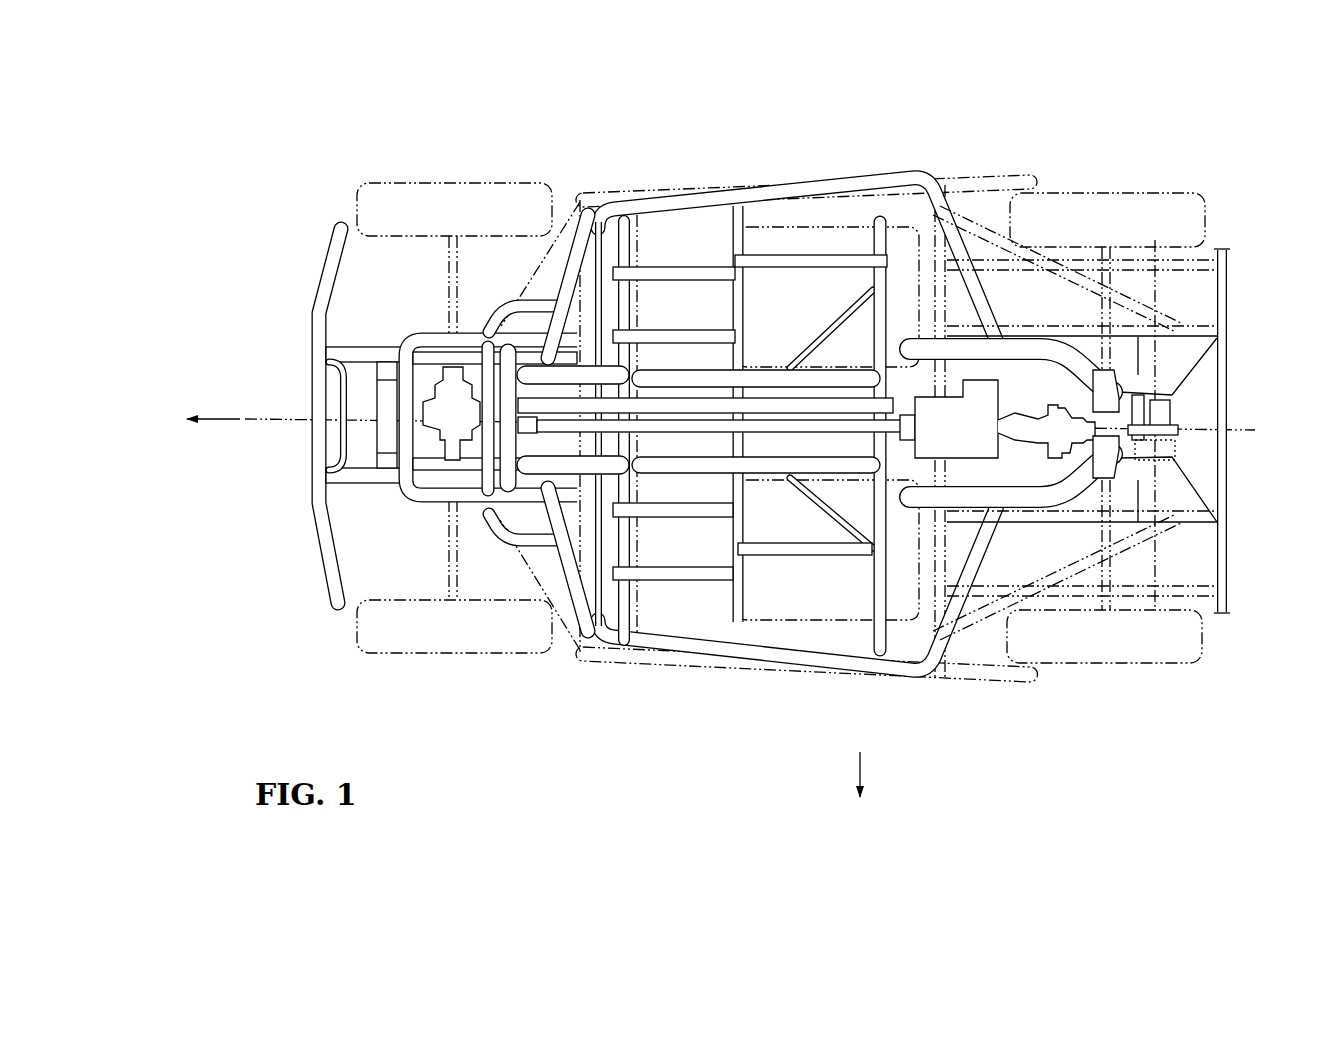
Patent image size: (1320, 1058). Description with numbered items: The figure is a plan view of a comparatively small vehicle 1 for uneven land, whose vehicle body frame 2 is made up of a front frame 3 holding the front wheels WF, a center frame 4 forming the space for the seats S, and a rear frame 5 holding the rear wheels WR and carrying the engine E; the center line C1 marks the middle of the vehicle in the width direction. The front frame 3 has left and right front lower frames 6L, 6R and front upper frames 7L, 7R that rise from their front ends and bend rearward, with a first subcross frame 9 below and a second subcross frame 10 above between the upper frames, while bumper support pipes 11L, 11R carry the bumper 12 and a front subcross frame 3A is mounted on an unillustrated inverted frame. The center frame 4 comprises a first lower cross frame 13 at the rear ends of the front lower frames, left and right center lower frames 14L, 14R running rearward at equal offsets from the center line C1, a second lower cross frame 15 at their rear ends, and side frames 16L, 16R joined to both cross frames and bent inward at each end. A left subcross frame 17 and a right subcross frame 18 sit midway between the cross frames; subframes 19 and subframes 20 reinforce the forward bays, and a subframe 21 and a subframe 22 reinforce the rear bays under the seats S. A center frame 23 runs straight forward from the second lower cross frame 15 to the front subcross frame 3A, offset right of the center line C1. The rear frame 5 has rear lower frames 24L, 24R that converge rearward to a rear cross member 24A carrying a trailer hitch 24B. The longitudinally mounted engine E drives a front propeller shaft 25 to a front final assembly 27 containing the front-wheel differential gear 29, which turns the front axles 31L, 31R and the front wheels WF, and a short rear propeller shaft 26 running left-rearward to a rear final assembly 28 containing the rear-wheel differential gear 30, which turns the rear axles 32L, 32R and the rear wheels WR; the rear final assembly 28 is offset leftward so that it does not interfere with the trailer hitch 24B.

The vehicle 1 is at (742, 427).
The vehicle body frame 2 is at (797, 328).
The front frame 3 is at (429, 424).
The front subcross frame 3A is at (530, 377).
The center frame 4 is at (797, 596).
The rear frame 5 is at (1103, 474).
The right front lower frame 6R is at (566, 372).
The left front lower frame 6L is at (563, 560).
The right front upper frame 7R is at (433, 338).
The left front upper frame 7L is at (427, 497).
The first subcross frame 9 is at (408, 395).
The second subcross frame 10 is at (487, 388).
The right bumper support pipe 11R is at (360, 346).
The left bumper support pipe 11L is at (373, 484).
The bumper 12 is at (311, 335).
The first lower cross frame 13 is at (633, 232).
The right center lower frame 14R is at (700, 377).
The left center lower frame 14L is at (663, 470).
The second lower cross frame 15 is at (878, 243).
The right side frame 16R is at (802, 188).
The left side frame 16L is at (735, 662).
The left subcross frame 17 is at (722, 607).
The right subcross frame 18 is at (752, 222).
The subframes 19 is at (688, 512).
The subframes 20 is at (672, 272).
The subframe 21 is at (775, 545).
The subframe 22 is at (777, 262).
The center frame 23 is at (763, 405).
The right rear lower frame 24R is at (1020, 338).
The left rear lower frame 24L is at (1033, 508).
The rear cross member 24A is at (1160, 413).
The trailer hitch 24B is at (1173, 428).
The front propeller shaft 25 is at (832, 425).
The rear propeller shaft 26 is at (1037, 445).
The front final assembly 27 is at (432, 438).
The rear final assembly 28 is at (1125, 411).
The front-wheel differential gear 29 is at (425, 436).
The rear-wheel differential gear 30 is at (1162, 446).
The right front axle 31R is at (450, 252).
The left front axle 31L is at (460, 567).
The right rear axle 32R is at (1113, 280).
The left rear axle 32L is at (1110, 582).
The front wheels WF is at (485, 183).
The rear wheels WR is at (1162, 193).
The seat S is at (838, 217).
The engine E is at (1000, 400).
The center line C1 is at (262, 416).